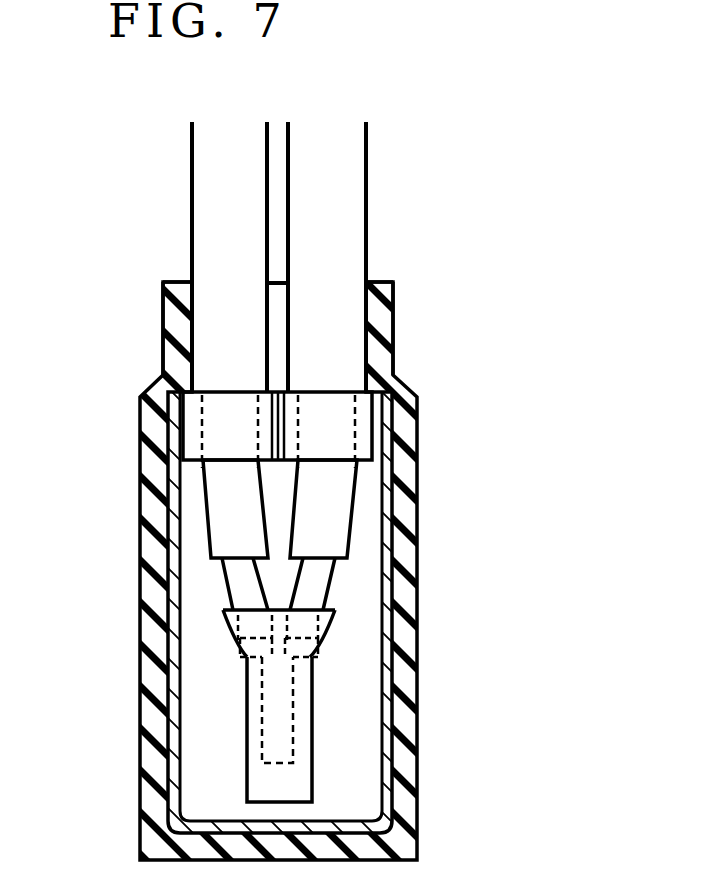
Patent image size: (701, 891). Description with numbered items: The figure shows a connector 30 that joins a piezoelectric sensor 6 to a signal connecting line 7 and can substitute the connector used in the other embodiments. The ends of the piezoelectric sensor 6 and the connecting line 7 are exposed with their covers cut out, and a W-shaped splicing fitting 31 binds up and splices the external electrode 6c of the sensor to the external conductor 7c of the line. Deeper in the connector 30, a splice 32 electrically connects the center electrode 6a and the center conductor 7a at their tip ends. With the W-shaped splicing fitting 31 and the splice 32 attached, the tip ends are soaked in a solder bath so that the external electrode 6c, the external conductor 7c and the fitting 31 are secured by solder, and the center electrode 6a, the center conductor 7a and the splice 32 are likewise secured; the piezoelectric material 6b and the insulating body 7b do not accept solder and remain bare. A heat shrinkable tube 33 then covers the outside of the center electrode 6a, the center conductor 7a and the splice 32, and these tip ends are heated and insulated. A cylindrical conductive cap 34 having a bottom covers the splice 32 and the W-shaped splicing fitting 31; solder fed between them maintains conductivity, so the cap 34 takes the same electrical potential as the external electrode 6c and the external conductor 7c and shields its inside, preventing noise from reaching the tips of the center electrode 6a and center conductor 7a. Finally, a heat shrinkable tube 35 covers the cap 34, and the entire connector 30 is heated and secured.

The piezoelectric sensor 6 is at (232, 197).
The connecting line 7 is at (330, 200).
The center electrode 6a is at (258, 655).
The piezoelectric material 6b is at (240, 597).
The external electrode 6c is at (220, 498).
The center conductor 7a is at (300, 655).
The insulating body 7b is at (317, 590).
The external conductor 7c is at (332, 495).
The connector 30 is at (478, 827).
The W-shaped splicing fitting 31 is at (323, 427).
The splice 32 is at (292, 718).
The heat shrinkable tube 33 is at (305, 748).
The conductive cap 34 is at (400, 630).
The heat shrinkable tube 35 is at (387, 337).